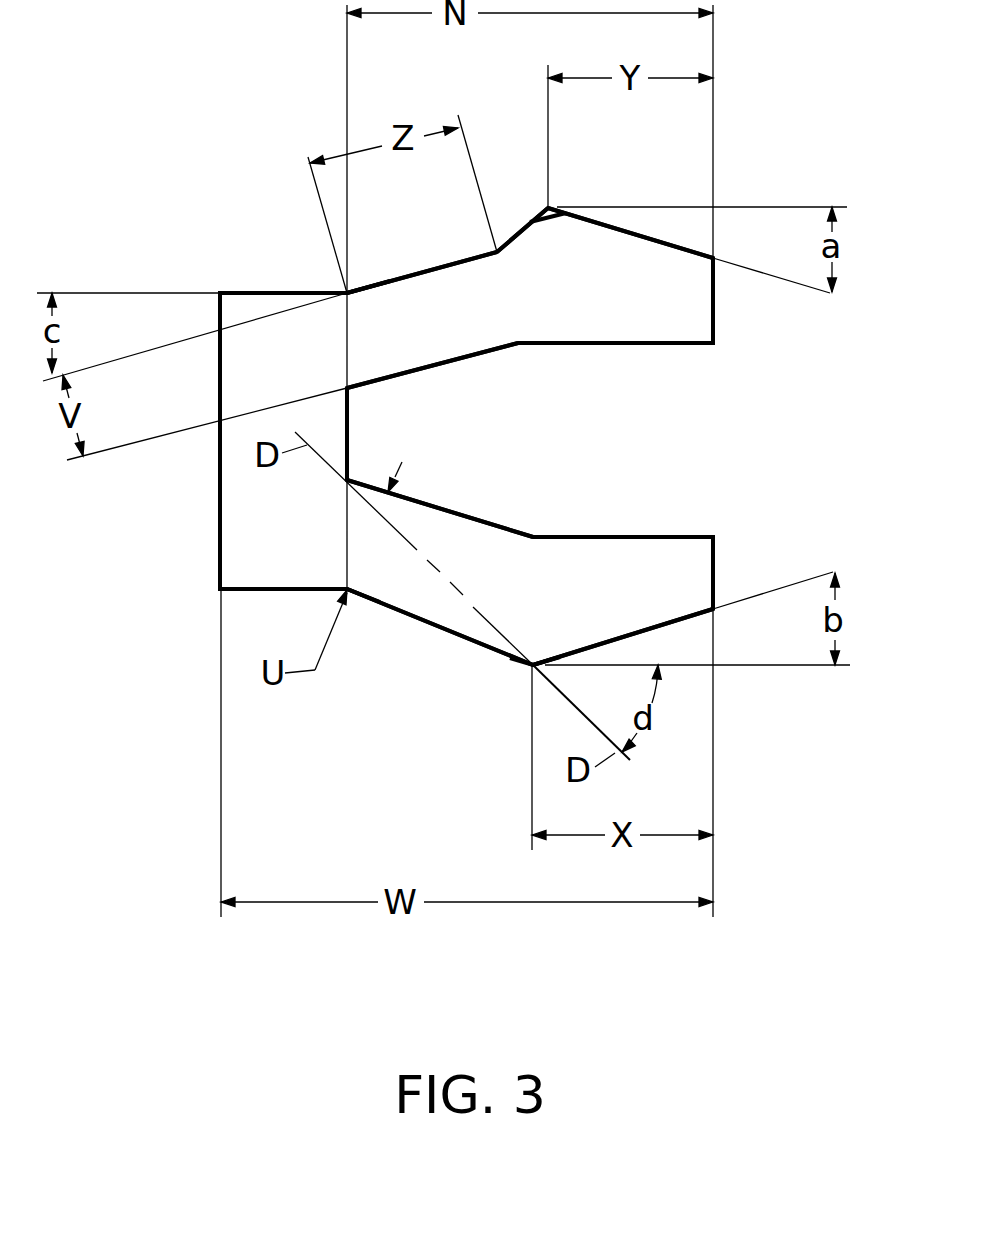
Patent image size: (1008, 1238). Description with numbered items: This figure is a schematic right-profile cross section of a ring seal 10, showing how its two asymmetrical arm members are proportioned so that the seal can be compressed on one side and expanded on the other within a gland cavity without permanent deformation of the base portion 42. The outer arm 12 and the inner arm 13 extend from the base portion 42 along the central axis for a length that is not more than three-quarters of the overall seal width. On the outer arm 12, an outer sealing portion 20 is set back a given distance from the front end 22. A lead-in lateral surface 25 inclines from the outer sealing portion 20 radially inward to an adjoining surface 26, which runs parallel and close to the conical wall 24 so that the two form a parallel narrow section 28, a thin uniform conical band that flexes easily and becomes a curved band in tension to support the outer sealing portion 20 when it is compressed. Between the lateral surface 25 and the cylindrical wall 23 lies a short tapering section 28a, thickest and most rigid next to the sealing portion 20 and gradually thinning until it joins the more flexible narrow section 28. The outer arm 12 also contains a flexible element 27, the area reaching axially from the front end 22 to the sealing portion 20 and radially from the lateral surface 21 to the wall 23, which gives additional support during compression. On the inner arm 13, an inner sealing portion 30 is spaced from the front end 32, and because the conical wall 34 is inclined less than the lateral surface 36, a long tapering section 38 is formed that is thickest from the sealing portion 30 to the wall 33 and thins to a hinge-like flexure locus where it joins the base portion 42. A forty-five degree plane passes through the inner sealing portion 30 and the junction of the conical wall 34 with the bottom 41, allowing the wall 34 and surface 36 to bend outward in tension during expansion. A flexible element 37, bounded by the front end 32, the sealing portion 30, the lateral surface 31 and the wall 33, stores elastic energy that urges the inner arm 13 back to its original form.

The ring seal 10 is at (205, 572).
The outer arm 12 is at (717, 343).
The inner arm 13 is at (720, 532).
The outer sealing portion 20 is at (548, 208).
The lateral surface 21 is at (637, 230).
The front end 22 is at (715, 310).
The cylindrical wall 23 is at (640, 345).
The conical wall 24 is at (450, 363).
The lead-in lateral surface 25 is at (527, 223).
The adjoining surface 26 is at (433, 268).
The flexible element 27 is at (645, 283).
The parallel narrow section 28 is at (420, 325).
The short tapering section 28a is at (530, 262).
The inner sealing portion 30 is at (532, 665).
The lateral surface 31 is at (715, 607).
The front end 32 is at (715, 555).
The wall 33 is at (640, 535).
The conical wall 34 is at (457, 508).
The lateral surface 36 is at (450, 633).
The flexible element 37 is at (622, 595).
The inner arm tapering section 38 is at (427, 577).
The bottom 41 is at (348, 430).
The base portion 42 is at (270, 517).